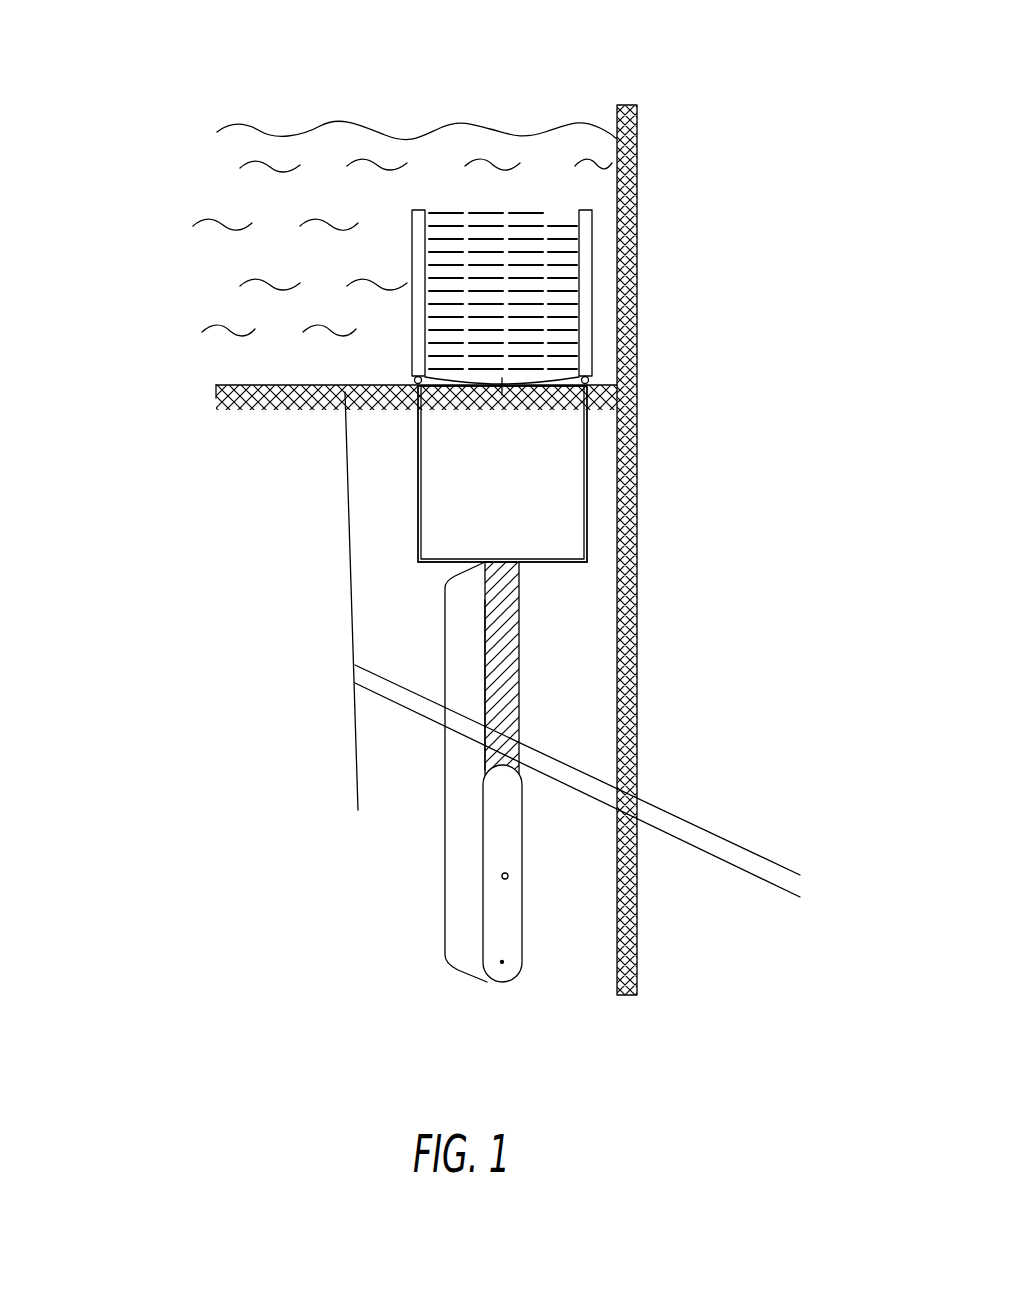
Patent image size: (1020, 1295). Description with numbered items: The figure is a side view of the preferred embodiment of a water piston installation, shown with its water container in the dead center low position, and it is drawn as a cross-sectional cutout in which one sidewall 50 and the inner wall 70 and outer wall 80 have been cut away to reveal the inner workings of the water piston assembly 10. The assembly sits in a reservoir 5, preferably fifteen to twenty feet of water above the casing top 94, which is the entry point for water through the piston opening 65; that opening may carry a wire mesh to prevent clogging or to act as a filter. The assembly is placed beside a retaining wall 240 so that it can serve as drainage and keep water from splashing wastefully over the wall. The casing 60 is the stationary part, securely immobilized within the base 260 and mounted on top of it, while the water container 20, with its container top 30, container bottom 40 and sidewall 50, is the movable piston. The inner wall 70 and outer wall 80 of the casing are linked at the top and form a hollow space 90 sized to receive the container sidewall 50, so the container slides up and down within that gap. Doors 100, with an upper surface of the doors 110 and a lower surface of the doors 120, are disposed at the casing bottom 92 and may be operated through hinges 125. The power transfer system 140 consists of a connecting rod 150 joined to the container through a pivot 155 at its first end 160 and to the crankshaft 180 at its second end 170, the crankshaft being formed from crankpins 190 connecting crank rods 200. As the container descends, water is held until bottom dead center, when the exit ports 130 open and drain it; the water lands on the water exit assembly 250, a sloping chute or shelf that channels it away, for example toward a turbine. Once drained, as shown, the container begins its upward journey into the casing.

The reservoir 5 is at (308, 82).
The water piston assembly 10 is at (177, 392).
The water container 20 is at (418, 452).
The container top 30 is at (420, 410).
The container bottom 40 is at (418, 558).
The sidewall 50 is at (418, 503).
The casing 60 is at (413, 197).
The piston opening 65 is at (458, 202).
The inner wall 70 is at (548, 213).
The outer wall 80 is at (412, 262).
The hollow space 90 is at (412, 238).
The casing bottom 92 is at (585, 212).
The casing top 94 is at (411, 373).
The doors 100 is at (502, 378).
The upper surface of the doors 110 is at (553, 372).
The lower surface of the doors 120 is at (472, 393).
The hinges 125 is at (414, 378).
The exit ports 130 is at (438, 567).
The power transfer system 140 is at (445, 783).
The connecting rod 150 is at (500, 688).
The pivot 155 is at (507, 561).
The first end 160 is at (510, 573).
The second end 170 is at (502, 785).
The crankshaft 180 is at (508, 877).
The crankpin 190 is at (533, 876).
The crank rod 200 is at (492, 972).
The retaining wall 240 is at (637, 692).
The water exit assembly 250 is at (752, 868).
The base 260 is at (231, 404).